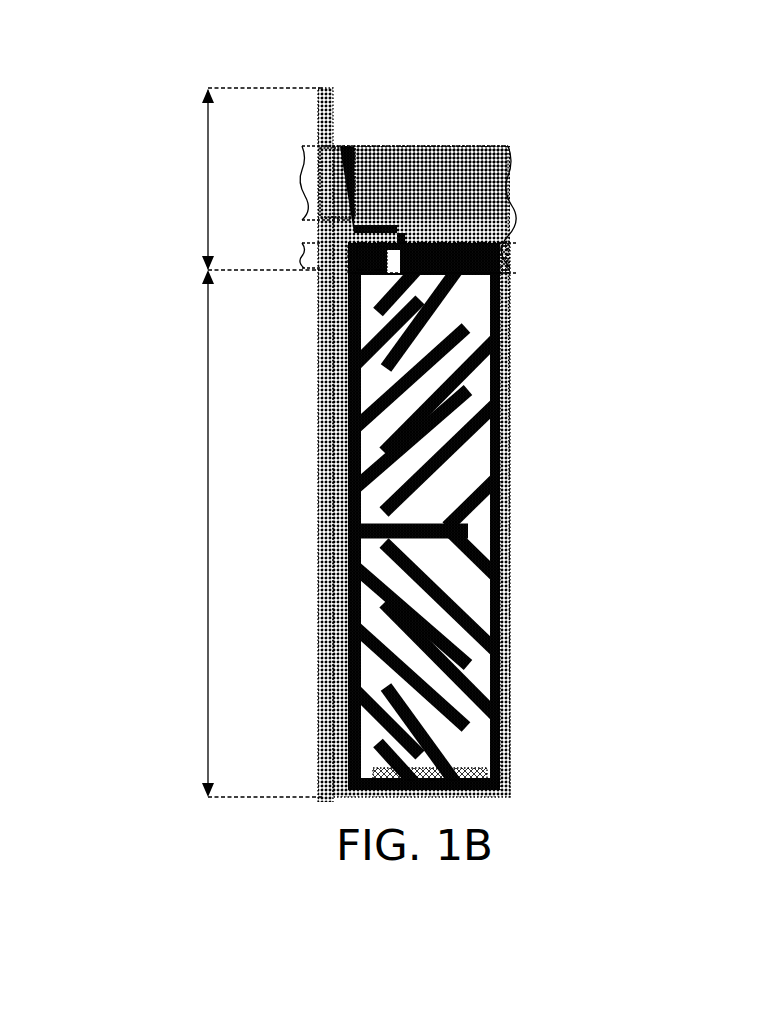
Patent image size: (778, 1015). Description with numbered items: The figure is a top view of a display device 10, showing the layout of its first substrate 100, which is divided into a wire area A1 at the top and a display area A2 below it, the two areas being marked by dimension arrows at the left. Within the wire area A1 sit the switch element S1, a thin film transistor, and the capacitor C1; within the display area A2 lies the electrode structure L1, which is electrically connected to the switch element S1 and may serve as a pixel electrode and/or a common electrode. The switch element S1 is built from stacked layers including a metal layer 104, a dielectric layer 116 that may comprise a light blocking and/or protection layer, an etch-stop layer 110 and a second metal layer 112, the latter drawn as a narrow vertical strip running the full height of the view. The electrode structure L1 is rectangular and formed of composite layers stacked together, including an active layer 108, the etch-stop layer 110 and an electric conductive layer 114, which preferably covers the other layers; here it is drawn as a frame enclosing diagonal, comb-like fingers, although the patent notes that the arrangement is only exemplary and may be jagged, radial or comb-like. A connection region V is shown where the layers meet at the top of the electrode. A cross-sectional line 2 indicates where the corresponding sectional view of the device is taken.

The display device 10 is at (79, 31).
The first substrate 100 is at (541, 538).
The metal layer 104 is at (493, 192).
The dielectric layer 116 is at (471, 174).
The active layer 108 is at (508, 461).
The etch-stop layer 110 is at (338, 148).
The metal layer 112 is at (327, 89).
The electric conductive layer 114 is at (497, 236).
The via V is at (500, 270).
The cross-sectional line 2- 2 is at (458, 301).
The switch element S1 is at (305, 138).
The capacitor C1 is at (278, 252).
The electrode structure L1 is at (342, 458).
The wire area A1 is at (244, 179).
The display area A2 is at (244, 533).